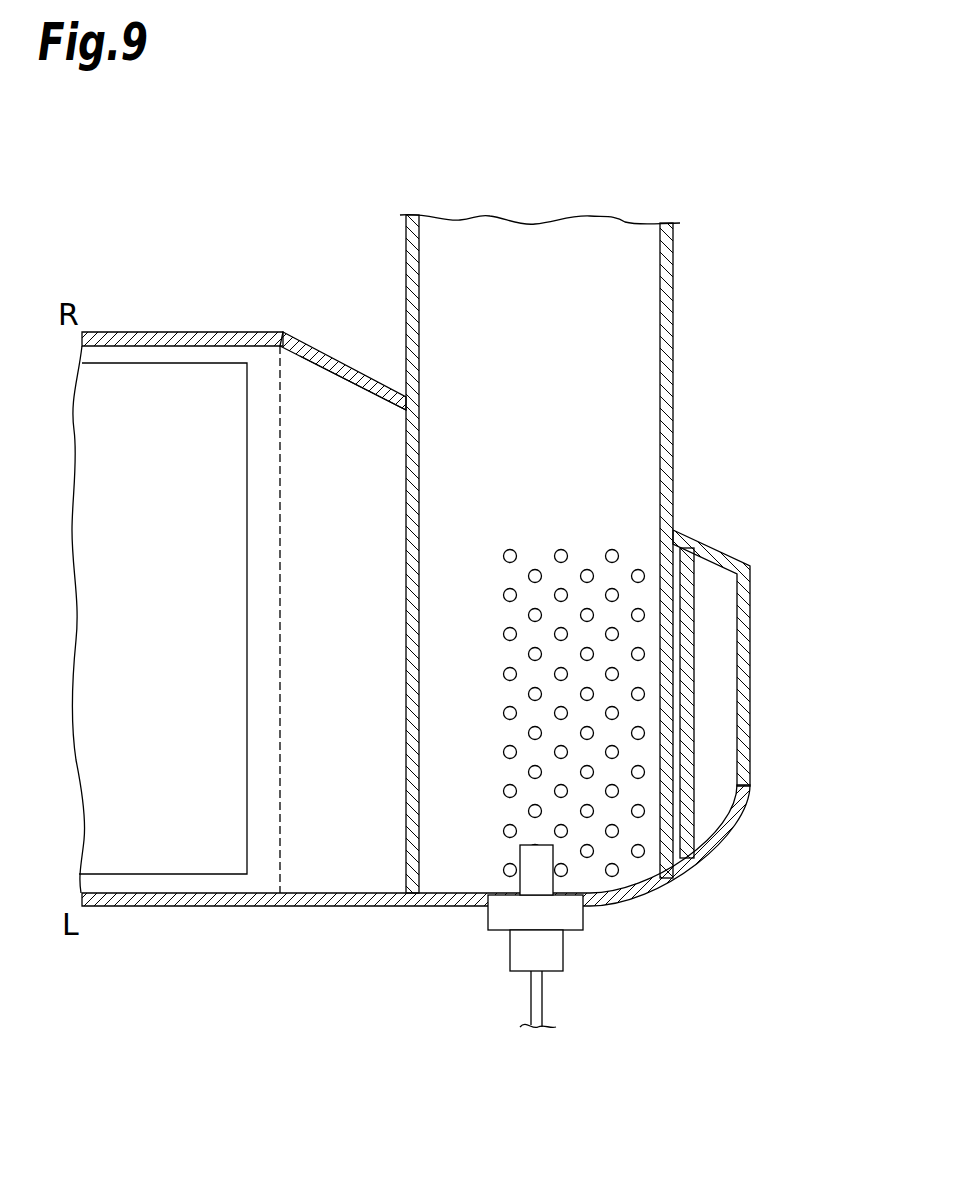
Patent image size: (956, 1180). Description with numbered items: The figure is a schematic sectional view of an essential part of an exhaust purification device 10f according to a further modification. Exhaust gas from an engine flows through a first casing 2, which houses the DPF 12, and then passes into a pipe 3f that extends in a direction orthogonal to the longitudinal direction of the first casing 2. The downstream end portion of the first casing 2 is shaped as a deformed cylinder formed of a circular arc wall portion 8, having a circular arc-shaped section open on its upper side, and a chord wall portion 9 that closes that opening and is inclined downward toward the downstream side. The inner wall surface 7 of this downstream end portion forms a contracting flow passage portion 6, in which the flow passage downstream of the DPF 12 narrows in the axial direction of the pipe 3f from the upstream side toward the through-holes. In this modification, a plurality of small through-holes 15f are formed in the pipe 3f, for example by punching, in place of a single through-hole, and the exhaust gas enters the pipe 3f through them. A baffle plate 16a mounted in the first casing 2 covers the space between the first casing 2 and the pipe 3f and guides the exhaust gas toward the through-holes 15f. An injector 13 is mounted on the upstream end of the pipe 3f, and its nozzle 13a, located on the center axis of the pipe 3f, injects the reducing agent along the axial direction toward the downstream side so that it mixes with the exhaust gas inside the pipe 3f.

The exhaust purification device 10f is at (714, 170).
The pipe 3f is at (674, 332).
The first casing 2 is at (186, 333).
The DPF 12 is at (131, 362).
The chord wall portion 9 is at (315, 350).
The inner wall surface 7 is at (352, 385).
The contracting flow passage portion 6 is at (371, 632).
The circular arc wall portion 8 is at (327, 907).
The baffle plate 16a is at (694, 631).
The through-holes 15f is at (634, 740).
The injector 13 is at (563, 951).
The nozzle 13a is at (547, 882).